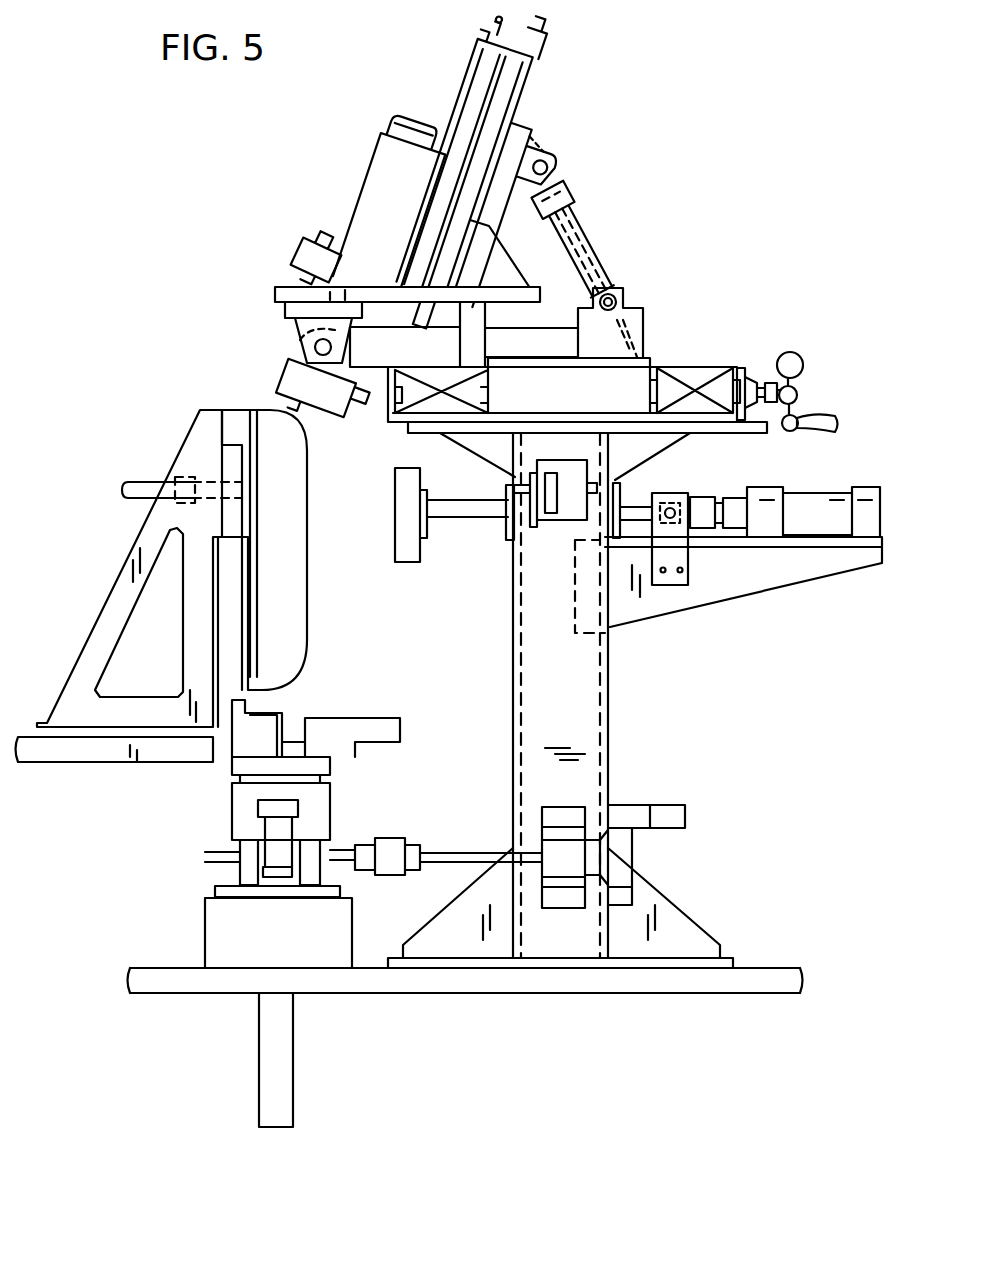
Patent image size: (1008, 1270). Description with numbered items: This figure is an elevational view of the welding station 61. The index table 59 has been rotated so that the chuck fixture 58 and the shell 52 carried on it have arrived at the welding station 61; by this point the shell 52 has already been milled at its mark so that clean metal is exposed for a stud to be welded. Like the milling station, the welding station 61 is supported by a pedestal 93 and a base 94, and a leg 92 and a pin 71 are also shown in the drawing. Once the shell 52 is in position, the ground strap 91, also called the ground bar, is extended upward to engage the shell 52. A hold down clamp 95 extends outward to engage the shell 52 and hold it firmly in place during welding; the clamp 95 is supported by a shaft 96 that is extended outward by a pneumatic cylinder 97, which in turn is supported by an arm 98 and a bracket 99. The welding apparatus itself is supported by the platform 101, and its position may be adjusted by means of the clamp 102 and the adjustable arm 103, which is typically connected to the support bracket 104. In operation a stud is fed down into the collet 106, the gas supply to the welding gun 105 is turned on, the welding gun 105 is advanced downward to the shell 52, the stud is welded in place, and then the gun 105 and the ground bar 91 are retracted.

The shell 52 is at (308, 640).
The chuck fixture 58 is at (125, 555).
The index table 59 is at (117, 770).
The welding station 61 is at (675, 105).
The pin 71 is at (147, 480).
The ground strap 91 is at (265, 712).
The support leg 92 is at (258, 1037).
The pedestal 93 is at (513, 656).
The base 94 is at (387, 962).
The hold down clamp 95 is at (393, 515).
The shaft 96 is at (468, 527).
The pneumatic cylinder 97 is at (823, 487).
The arm 98 is at (752, 600).
The bracket 99 is at (690, 553).
The platform 101 is at (722, 433).
The clamp 102 is at (808, 382).
The adjustable arm 103 is at (588, 220).
The support bracket 104 is at (498, 205).
The welding gun 105 is at (284, 370).
The collet 106 is at (300, 236).